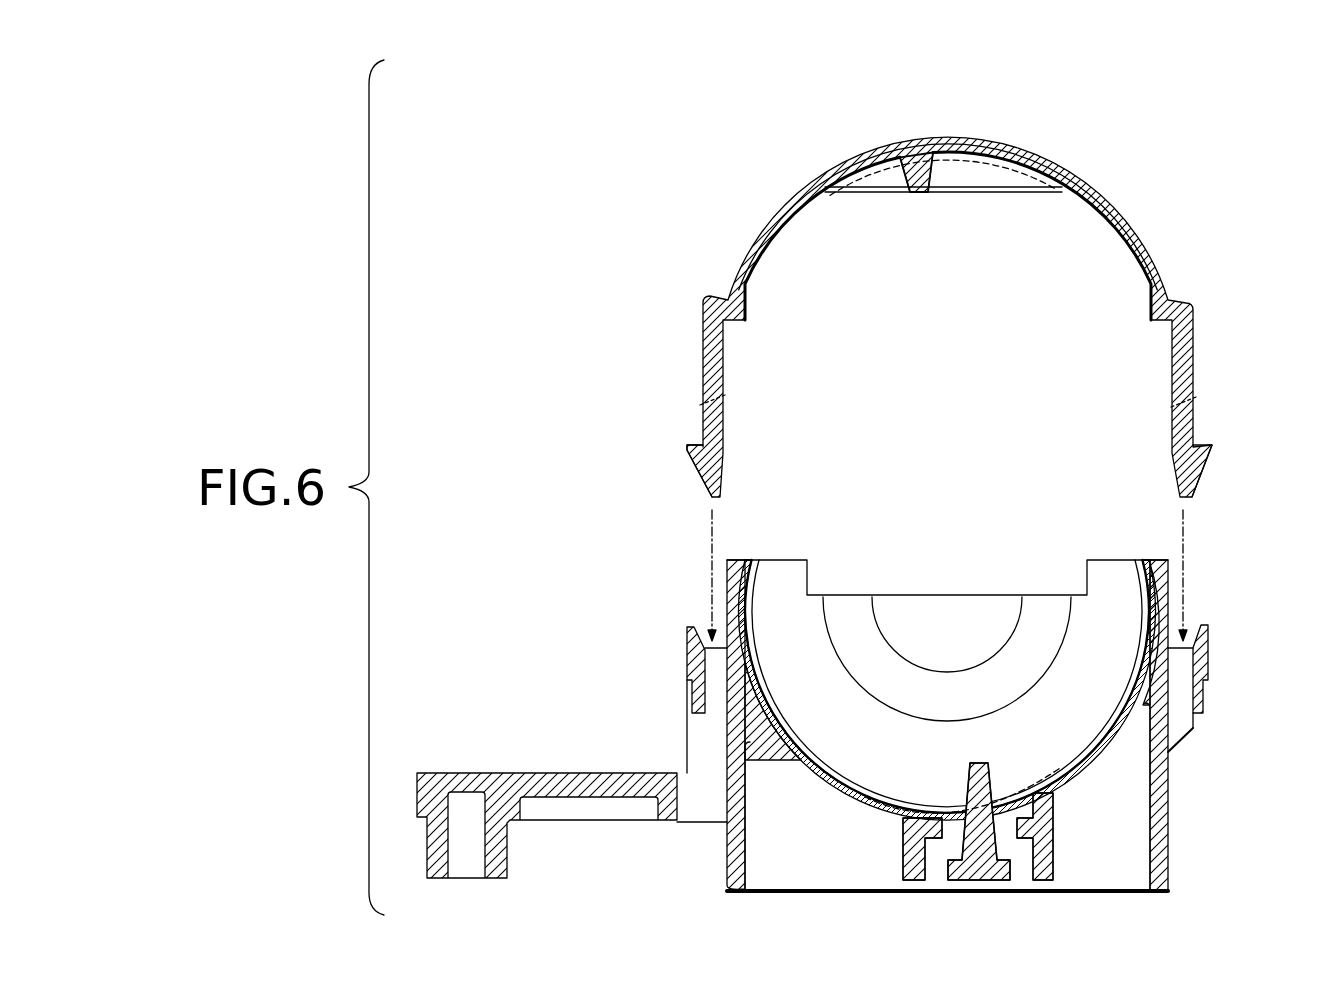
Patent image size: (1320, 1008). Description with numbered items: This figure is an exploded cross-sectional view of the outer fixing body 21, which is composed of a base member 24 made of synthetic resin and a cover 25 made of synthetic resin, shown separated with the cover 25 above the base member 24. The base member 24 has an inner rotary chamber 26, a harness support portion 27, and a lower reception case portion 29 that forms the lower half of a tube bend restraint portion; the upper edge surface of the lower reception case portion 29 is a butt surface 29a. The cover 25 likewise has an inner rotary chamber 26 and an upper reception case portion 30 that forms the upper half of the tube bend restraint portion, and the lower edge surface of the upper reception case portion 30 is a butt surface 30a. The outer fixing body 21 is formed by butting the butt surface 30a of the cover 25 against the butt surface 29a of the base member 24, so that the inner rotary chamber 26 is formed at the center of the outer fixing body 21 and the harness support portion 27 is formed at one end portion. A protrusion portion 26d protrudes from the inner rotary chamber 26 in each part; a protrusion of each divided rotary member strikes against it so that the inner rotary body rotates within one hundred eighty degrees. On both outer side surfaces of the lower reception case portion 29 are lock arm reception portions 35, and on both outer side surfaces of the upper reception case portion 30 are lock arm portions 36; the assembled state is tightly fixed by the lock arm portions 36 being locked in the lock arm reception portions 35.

The outer fixing body 21 is at (668, 240).
The base member 24 is at (668, 684).
The cover 25 is at (698, 338).
The inner rotary chamber 26 is at (1093, 705).
The protrusion portion 26d is at (953, 138).
The harness support portion 27 is at (918, 665).
The lower reception case portion 29 is at (1100, 780).
The butt surface 29a is at (748, 557).
The upper reception case portion 30 is at (1093, 205).
The butt surface 30a is at (712, 400).
The lock arm reception portion 35 is at (688, 648).
The lock arm portion 36 is at (690, 452).